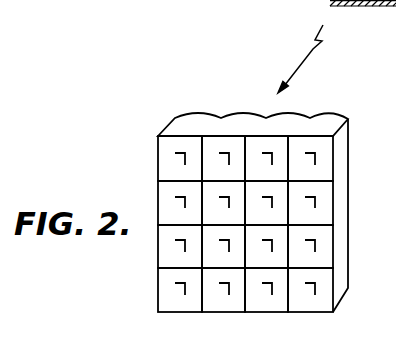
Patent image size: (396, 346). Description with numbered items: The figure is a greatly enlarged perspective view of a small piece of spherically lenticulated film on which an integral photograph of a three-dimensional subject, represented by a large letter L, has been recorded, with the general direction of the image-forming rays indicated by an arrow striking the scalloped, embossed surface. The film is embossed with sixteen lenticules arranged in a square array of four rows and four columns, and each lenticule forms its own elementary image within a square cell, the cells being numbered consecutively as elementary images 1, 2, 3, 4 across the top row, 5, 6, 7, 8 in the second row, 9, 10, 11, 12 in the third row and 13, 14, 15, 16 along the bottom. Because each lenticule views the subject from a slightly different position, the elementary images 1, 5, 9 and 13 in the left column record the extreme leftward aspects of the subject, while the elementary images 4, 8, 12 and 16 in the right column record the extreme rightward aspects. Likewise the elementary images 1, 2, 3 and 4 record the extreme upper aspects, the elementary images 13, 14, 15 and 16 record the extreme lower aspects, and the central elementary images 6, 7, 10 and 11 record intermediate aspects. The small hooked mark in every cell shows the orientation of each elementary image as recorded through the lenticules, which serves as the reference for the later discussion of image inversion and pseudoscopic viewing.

The elementary image 1 is at (180, 158).
The elementary image 2 is at (223, 158).
The elementary image 3 is at (266, 158).
The elementary image 4 is at (310, 158).
The elementary image 5 is at (180, 203).
The elementary image 6 is at (223, 203).
The elementary image 7 is at (266, 203).
The elementary image 8 is at (310, 203).
The elementary image 9 is at (180, 246).
The elementary image 10 is at (223, 246).
The elementary image 11 is at (266, 246).
The elementary image 12 is at (310, 246).
The elementary image 13 is at (180, 290).
The elementary image 14 is at (223, 290).
The elementary image 15 is at (266, 290).
The elementary image 16 is at (310, 290).